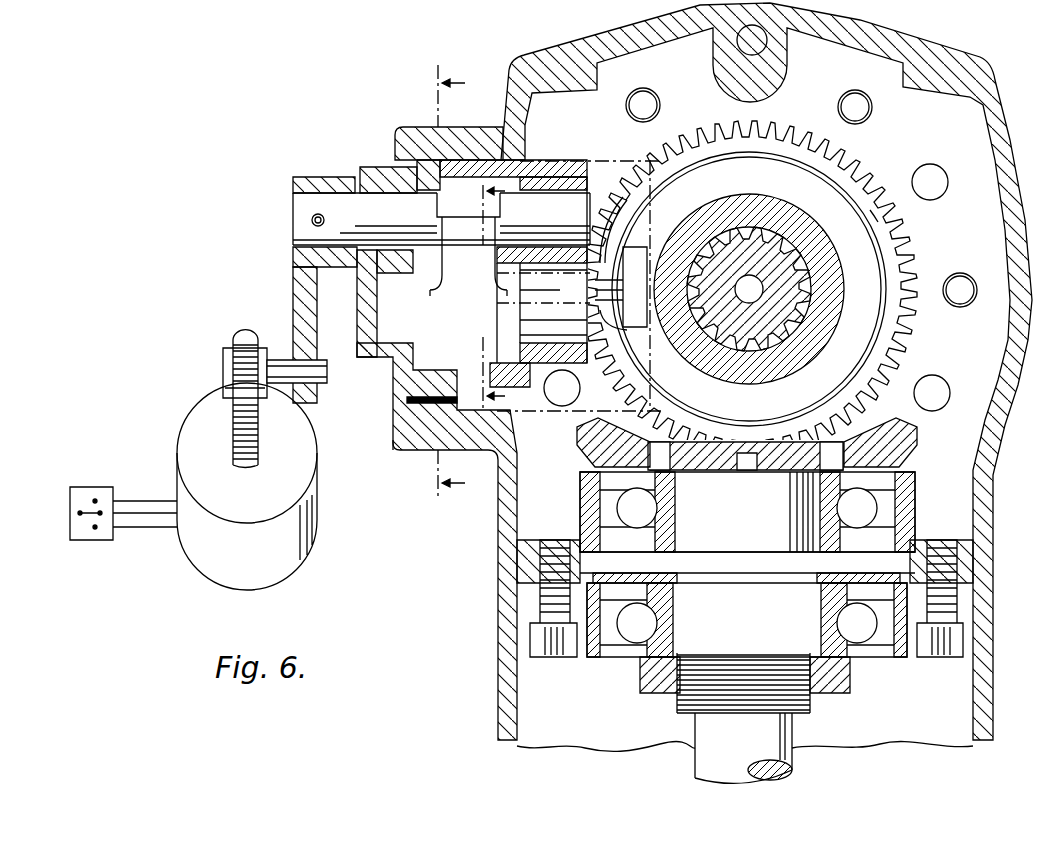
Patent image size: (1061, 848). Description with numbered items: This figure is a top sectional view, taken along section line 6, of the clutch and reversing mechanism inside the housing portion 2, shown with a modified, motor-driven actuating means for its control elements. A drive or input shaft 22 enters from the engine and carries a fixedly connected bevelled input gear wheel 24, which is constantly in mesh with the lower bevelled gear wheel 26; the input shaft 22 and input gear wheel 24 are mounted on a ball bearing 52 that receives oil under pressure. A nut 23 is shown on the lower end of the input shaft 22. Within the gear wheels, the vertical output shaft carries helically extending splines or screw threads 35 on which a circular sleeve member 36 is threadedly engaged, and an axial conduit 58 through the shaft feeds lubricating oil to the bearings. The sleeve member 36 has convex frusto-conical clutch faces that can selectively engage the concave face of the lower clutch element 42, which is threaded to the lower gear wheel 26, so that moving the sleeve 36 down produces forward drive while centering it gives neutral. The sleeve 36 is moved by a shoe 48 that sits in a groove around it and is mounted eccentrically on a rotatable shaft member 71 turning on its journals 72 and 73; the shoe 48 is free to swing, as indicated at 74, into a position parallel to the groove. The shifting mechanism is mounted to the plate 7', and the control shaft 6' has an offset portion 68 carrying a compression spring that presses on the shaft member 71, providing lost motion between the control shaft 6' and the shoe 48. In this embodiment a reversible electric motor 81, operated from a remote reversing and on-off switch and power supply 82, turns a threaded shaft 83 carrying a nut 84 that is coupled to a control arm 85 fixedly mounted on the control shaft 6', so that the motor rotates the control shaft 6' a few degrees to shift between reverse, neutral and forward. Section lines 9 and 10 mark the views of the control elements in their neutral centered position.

The housing portion 2 is at (1030, 325).
The section line 6- 6 is at (513, 162).
The control shaft 6' is at (428, 217).
The plate 7' is at (437, 134).
The section line 9- 9 is at (485, 296).
The section line 10- 10 is at (434, 281).
The input shaft 22 is at (793, 740).
The lock nut 23 is at (812, 700).
The input gear wheel 24 is at (918, 437).
The lower bevelled gear wheel 26 is at (749, 289).
The splines or screw threads 35 is at (800, 296).
The sleeve member 36 is at (862, 207).
The lower clutch element 42 is at (878, 178).
The shoe 48 is at (632, 247).
The ball bearing 52 is at (878, 655).
The conduit 58 is at (753, 289).
The offset portion 68 is at (446, 282).
The rotatable shaft member 71 is at (397, 365).
The journal 72 is at (327, 362).
The journal 73 is at (545, 364).
The swing position 74 is at (530, 265).
The reversible electric motor 81 is at (180, 432).
The reversing and on-off switch and power supply 82 is at (88, 487).
The threaded shaft 83 is at (233, 420).
The nut 84 is at (223, 360).
The control arm 85 is at (293, 302).